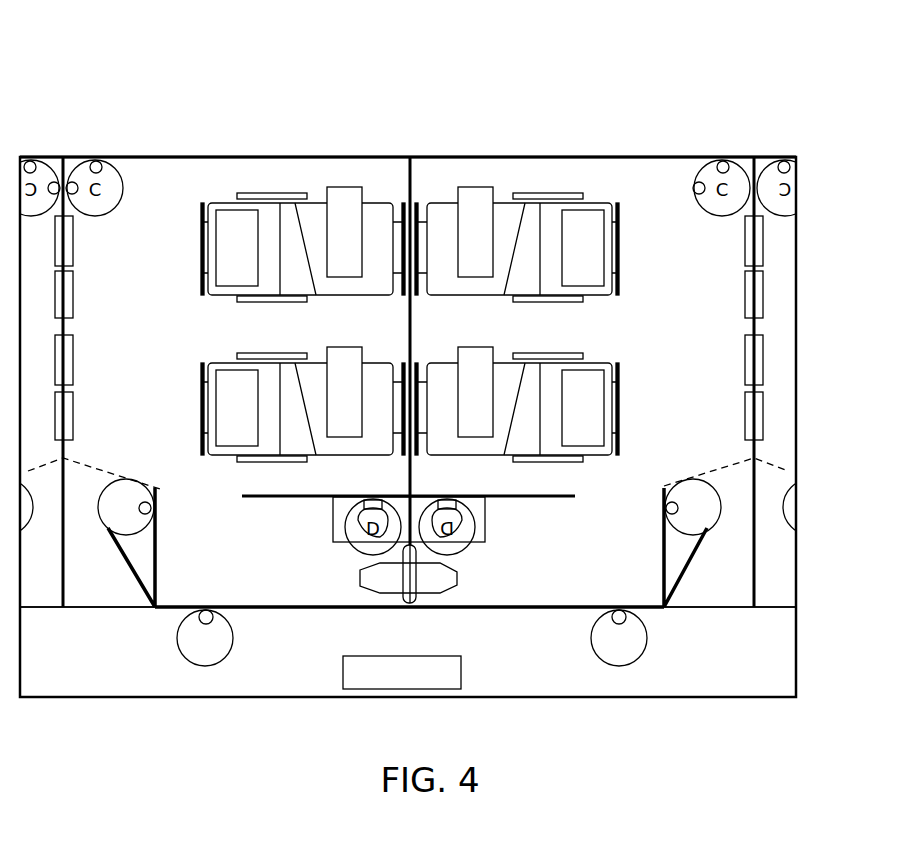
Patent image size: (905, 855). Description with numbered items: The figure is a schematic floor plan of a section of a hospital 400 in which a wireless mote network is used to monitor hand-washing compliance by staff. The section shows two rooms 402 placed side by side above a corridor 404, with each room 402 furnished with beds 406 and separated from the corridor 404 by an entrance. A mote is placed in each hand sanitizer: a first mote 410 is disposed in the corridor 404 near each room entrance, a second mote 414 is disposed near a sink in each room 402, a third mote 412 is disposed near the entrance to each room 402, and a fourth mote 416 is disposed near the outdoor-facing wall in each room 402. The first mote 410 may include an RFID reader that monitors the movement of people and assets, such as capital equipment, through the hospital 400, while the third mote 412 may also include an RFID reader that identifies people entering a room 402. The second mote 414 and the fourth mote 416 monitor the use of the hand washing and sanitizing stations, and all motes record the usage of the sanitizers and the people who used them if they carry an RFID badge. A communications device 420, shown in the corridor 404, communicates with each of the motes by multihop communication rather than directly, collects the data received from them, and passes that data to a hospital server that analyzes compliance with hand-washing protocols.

The hospital 400 is at (62, 66).
The rooms 402 is at (180, 148).
The corridor 404 is at (265, 680).
The bed 406 is at (598, 295).
The first mote 410 is at (178, 650).
The third mote 412 is at (133, 480).
The second mote 414 is at (352, 552).
The fourth mote 416 is at (123, 186).
The communications device 420 is at (402, 672).